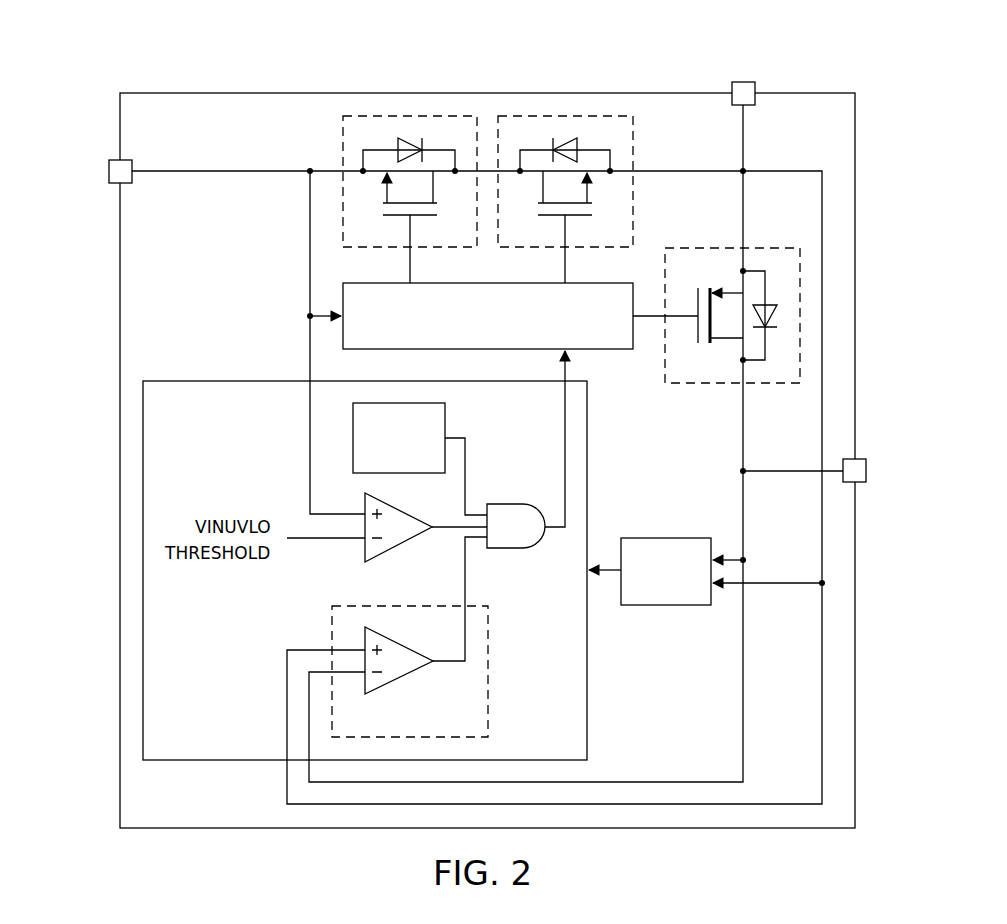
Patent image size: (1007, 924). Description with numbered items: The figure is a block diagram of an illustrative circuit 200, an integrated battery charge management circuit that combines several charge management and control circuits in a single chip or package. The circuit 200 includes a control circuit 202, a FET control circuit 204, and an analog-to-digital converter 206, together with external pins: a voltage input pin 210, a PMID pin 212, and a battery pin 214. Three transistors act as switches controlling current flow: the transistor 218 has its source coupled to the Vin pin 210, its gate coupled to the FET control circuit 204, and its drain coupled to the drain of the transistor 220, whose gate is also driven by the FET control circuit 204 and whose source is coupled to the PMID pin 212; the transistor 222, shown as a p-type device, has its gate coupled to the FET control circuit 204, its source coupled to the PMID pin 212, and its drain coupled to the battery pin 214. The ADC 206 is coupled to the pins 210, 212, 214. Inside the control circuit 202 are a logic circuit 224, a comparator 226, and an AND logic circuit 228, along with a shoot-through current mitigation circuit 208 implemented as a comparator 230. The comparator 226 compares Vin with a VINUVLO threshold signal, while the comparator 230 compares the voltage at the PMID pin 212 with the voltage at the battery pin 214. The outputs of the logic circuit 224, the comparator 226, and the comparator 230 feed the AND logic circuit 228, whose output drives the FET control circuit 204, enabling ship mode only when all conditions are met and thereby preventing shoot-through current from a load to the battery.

The circuit 200 is at (369, 90).
The control circuit 202 is at (241, 377).
The FET control circuit 204 is at (470, 329).
The analog-to-digital converter 206 is at (648, 583).
The shoot-through current mitigation circuit 208 is at (454, 637).
The voltage input (Vin) pin 210 is at (107, 165).
The PMID pin 212 is at (750, 80).
The battery pin 214 is at (869, 478).
The transistor 218 is at (341, 142).
The transistor 220 is at (637, 141).
The transistor 222 is at (716, 388).
The logic circuit 224 is at (381, 451).
The comparator 226 is at (398, 548).
The AND logic circuit 228 is at (510, 503).
The comparator 230 is at (395, 680).